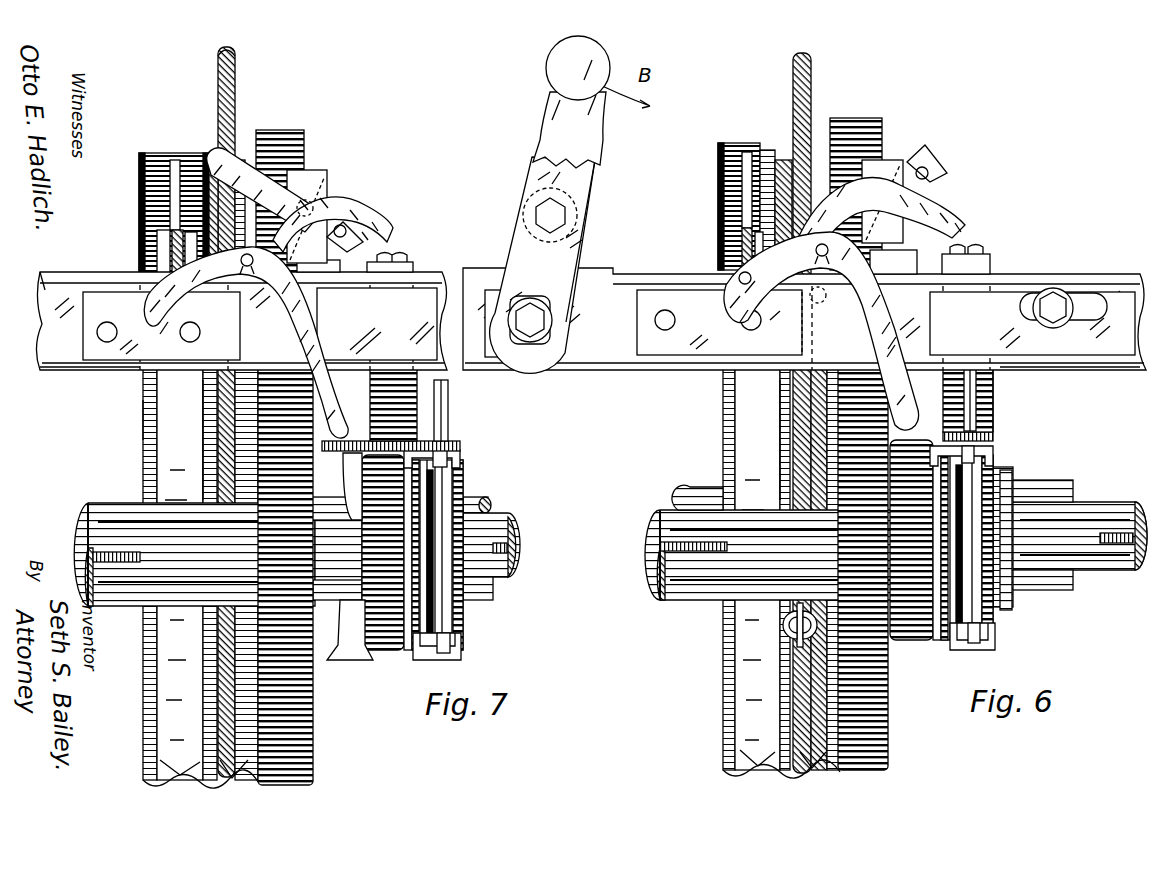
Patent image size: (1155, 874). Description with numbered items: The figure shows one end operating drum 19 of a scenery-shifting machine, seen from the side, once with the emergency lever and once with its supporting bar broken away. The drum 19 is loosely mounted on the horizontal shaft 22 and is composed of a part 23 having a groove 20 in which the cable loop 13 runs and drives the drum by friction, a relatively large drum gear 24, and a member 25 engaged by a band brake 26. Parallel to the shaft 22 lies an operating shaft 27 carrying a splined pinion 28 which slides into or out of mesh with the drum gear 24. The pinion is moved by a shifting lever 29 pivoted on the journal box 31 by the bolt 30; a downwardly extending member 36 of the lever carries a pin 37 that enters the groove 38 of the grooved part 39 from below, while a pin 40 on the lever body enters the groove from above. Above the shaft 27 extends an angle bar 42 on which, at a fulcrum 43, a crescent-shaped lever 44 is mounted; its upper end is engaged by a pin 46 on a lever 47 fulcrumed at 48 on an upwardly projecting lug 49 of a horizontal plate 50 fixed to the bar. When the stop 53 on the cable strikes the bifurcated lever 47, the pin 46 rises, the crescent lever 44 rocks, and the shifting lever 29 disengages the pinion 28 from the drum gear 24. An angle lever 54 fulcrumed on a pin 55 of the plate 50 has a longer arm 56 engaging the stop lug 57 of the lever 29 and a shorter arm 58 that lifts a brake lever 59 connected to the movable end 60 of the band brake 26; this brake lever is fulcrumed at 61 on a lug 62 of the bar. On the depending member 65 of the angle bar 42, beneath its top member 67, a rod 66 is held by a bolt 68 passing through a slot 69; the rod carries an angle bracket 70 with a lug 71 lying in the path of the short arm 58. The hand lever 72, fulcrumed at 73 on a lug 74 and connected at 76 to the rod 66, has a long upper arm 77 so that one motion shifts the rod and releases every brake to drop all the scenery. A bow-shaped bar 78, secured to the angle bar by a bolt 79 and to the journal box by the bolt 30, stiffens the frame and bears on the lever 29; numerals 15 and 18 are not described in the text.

In FIG. 7, the cable loop 13 is at (248, 55).
In FIG. 7, the sliding rod 15 is at (235, 100).
In FIG. 6, the sliding rod 15 is at (813, 96).
In FIG. 6, the gear 18 is at (976, 382).
In FIG. 7, the operating drum 19 is at (124, 420).
In FIG. 7, the groove 20 is at (245, 780).
In FIG. 6, the groove 20 is at (808, 770).
In FIG. 7, the horizontal shaft 22 is at (483, 499).
In FIG. 6, the horizontal shaft 22 is at (1046, 490).
In FIG. 7, the drum part 23 is at (205, 437).
In FIG. 6, the drum part 23 is at (790, 425).
In FIG. 7, the drum gear 24 is at (312, 700).
In FIG. 6, the drum gear 24 is at (872, 130).
In FIG. 7, the brake member 25 is at (188, 780).
In FIG. 6, the brake member 25 is at (762, 768).
In FIG. 7, the band brake 26 is at (172, 154).
In FIG. 6, the band brake 26 is at (740, 143).
In FIG. 7, the operating shaft 27 is at (496, 578).
In FIG. 6, the operating shaft 27 is at (1112, 504).
In FIG. 7, the pinion 28 is at (385, 652).
In FIG. 6, the pinion 28 is at (917, 652).
In FIG. 7, the shifting lever 29 is at (440, 445).
In FIG. 6, the shifting lever 29 is at (990, 433).
In FIG. 7, the bearing bolt 30 is at (352, 456).
In FIG. 6, the journal box 31 is at (1010, 600).
In FIG. 7, the downwardly extending member 36 is at (418, 733).
In FIG. 6, the downwardly extending member 36 is at (962, 651).
In FIG. 7, the pin 37 is at (455, 650).
In FIG. 6, the pin 37 is at (1000, 640).
In FIG. 7, the groove 38 is at (452, 530).
In FIG. 6, the groove 38 is at (1020, 470).
In FIG. 7, the grooved part 39 is at (460, 470).
In FIG. 6, the grooved part 39 is at (992, 470).
In FIG. 7, the pin 40 is at (462, 452).
In FIG. 6, the pin 40 is at (1000, 440).
In FIG. 7, the angle bar 42 is at (226, 312).
In FIG. 6, the angle bar 42 is at (1115, 276).
In FIG. 6, the fulcrum 43 is at (822, 323).
In FIG. 7, the crescent-shaped lever 44 is at (392, 236).
In FIG. 6, the crescent-shaped lever 44 is at (950, 207).
In FIG. 7, the pin 46 is at (346, 228).
In FIG. 6, the pin 46 is at (924, 170).
In FIG. 7, the lever 47 is at (288, 172).
In FIG. 6, the lever 47 is at (932, 165).
In FIG. 7, the fulcrum 48 is at (306, 200).
In FIG. 6, the fulcrum 48 is at (896, 205).
In FIG. 7, the upwardly projecting lug 49 is at (326, 176).
In FIG. 6, the upwardly projecting lug 49 is at (882, 194).
In FIG. 7, the horizontal plate 50 is at (330, 273).
In FIG. 6, the horizontal plate 50 is at (904, 284).
In FIG. 6, the stop 53 is at (790, 632).
In FIG. 7, the angle lever 54 is at (334, 206).
In FIG. 6, the angle lever 54 is at (999, 209).
In FIG. 7, the pin 55 is at (246, 342).
In FIG. 6, the pin 55 is at (821, 331).
In FIG. 7, the longer arm 56 is at (300, 345).
In FIG. 6, the longer arm 56 is at (880, 324).
In FIG. 7, the stop lug 57 is at (441, 418).
In FIG. 6, the stop lug 57 is at (966, 385).
In FIG. 7, the shorter arm 58 is at (179, 311).
In FIG. 6, the shorter arm 58 is at (783, 296).
In FIG. 7, the brake lever 59 is at (165, 232).
In FIG. 6, the brake lever 59 is at (742, 286).
In FIG. 7, the movable end 60 is at (140, 178).
In FIG. 6, the movable end 60 is at (720, 167).
In FIG. 7, the fulcrum 61 is at (152, 244).
In FIG. 6, the fulcrum 61 is at (722, 232).
In FIG. 7, the lug 62 is at (152, 268).
In FIG. 6, the lug 62 is at (722, 258).
In FIG. 7, the depending member 65 is at (48, 370).
In FIG. 6, the depending member 65 is at (1090, 363).
In FIG. 7, the rod 66 is at (377, 324).
In FIG. 6, the rod 66 is at (1015, 350).
In FIG. 7, the top member 67 is at (62, 283).
In FIG. 6, the top member 67 is at (1120, 265).
In FIG. 6, the bolt 68 is at (1055, 298).
In FIG. 6, the slot 69 is at (1090, 316).
In FIG. 7, the angle bracket 70 is at (100, 355).
In FIG. 6, the angle bracket 70 is at (670, 347).
In FIG. 7, the lug 71 is at (202, 323).
In FIG. 6, the lug 71 is at (719, 322).
In FIG. 6, the hand lever 72 is at (542, 265).
In FIG. 6, the fulcrum 73 is at (540, 212).
In FIG. 6, the lug 74 is at (588, 250).
In FIG. 6, the connection 76 is at (555, 330).
In FIG. 6, the upper arm 77 is at (555, 92).
In FIG. 7, the bow-shaped bar 78 is at (386, 392).
In FIG. 6, the bow-shaped bar 78 is at (1010, 266).
In FIG. 7, the bolt 79 is at (400, 262).
In FIG. 6, the bolt 79 is at (998, 252).